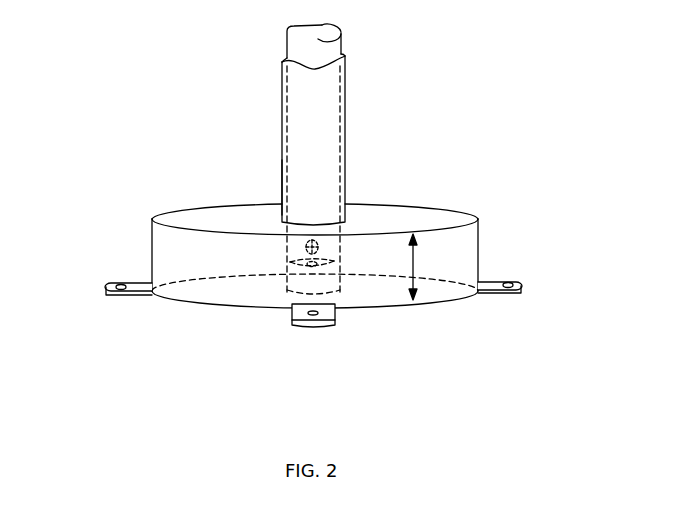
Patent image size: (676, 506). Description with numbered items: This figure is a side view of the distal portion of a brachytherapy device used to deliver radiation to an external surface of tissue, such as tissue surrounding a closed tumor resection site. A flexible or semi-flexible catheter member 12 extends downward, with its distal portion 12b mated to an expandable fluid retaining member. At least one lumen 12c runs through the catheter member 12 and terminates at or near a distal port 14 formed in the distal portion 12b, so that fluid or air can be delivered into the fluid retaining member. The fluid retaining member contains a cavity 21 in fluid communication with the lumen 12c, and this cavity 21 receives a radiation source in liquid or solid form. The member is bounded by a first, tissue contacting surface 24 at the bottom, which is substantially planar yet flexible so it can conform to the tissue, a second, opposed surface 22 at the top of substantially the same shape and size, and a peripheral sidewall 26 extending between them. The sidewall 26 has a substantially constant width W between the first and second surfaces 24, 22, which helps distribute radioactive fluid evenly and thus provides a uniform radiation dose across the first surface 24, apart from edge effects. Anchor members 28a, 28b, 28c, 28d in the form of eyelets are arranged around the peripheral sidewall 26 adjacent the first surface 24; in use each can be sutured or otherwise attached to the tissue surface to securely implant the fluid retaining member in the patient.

The catheter member 12 is at (282, 118).
The distal portion 12b is at (275, 187).
The lumen 12c is at (289, 49).
The distal port 14 is at (302, 247).
The cavity 21 is at (445, 258).
The second surface 22 is at (187, 220).
The first tissue contacting surface 24 is at (379, 311).
The peripheral sidewall 26 is at (478, 228).
The anchor member 28a is at (127, 296).
The anchor member 28b is at (333, 262).
The anchor member 28c is at (312, 326).
The anchor member 28d is at (497, 295).
The width W is at (402, 267).